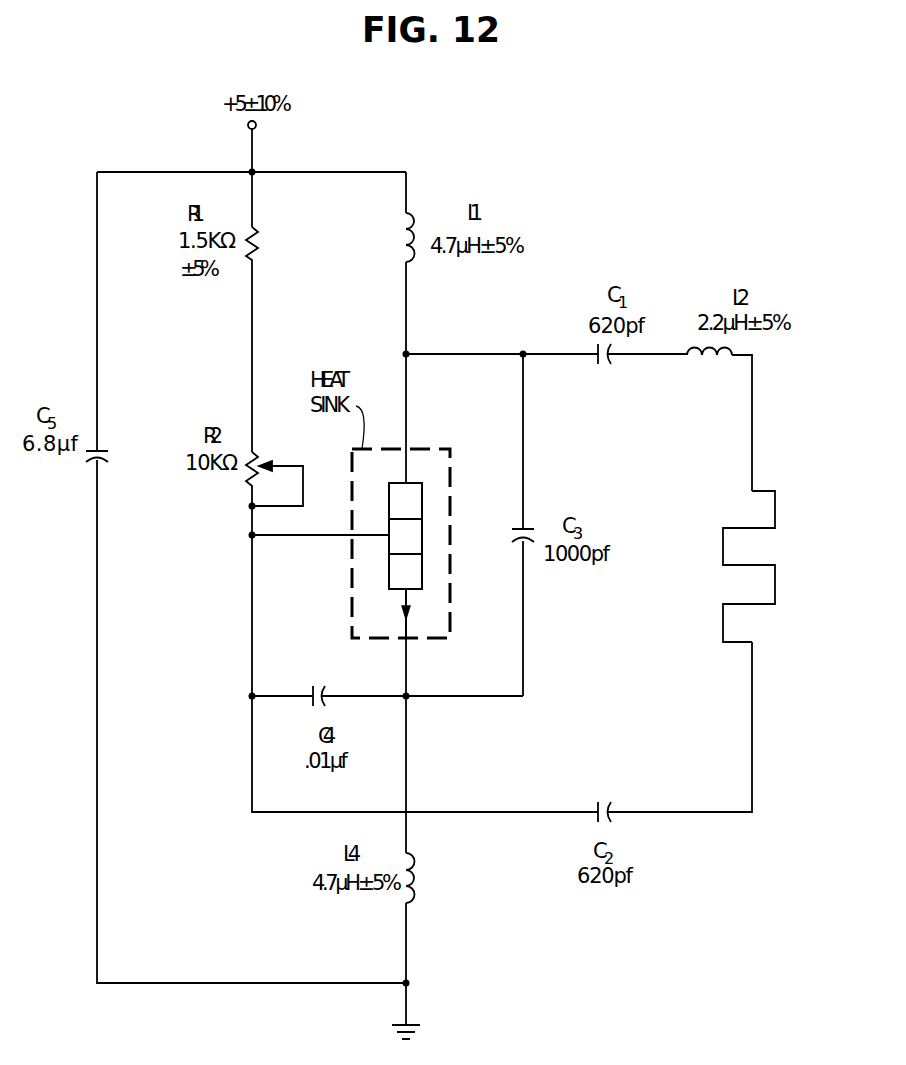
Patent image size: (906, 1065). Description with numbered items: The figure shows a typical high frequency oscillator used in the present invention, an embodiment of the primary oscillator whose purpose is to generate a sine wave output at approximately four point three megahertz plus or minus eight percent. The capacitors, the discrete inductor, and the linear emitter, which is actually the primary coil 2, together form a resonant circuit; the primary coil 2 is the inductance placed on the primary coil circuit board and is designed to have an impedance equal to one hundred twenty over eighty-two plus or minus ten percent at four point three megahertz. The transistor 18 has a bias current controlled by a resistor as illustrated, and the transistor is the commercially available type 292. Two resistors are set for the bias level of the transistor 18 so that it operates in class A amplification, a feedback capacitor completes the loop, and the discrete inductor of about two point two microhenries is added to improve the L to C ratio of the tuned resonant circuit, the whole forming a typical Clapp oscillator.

The primary coil 2 is at (790, 509).
The transistor 18 is at (392, 582).
The transistor type 292 is at (470, 478).